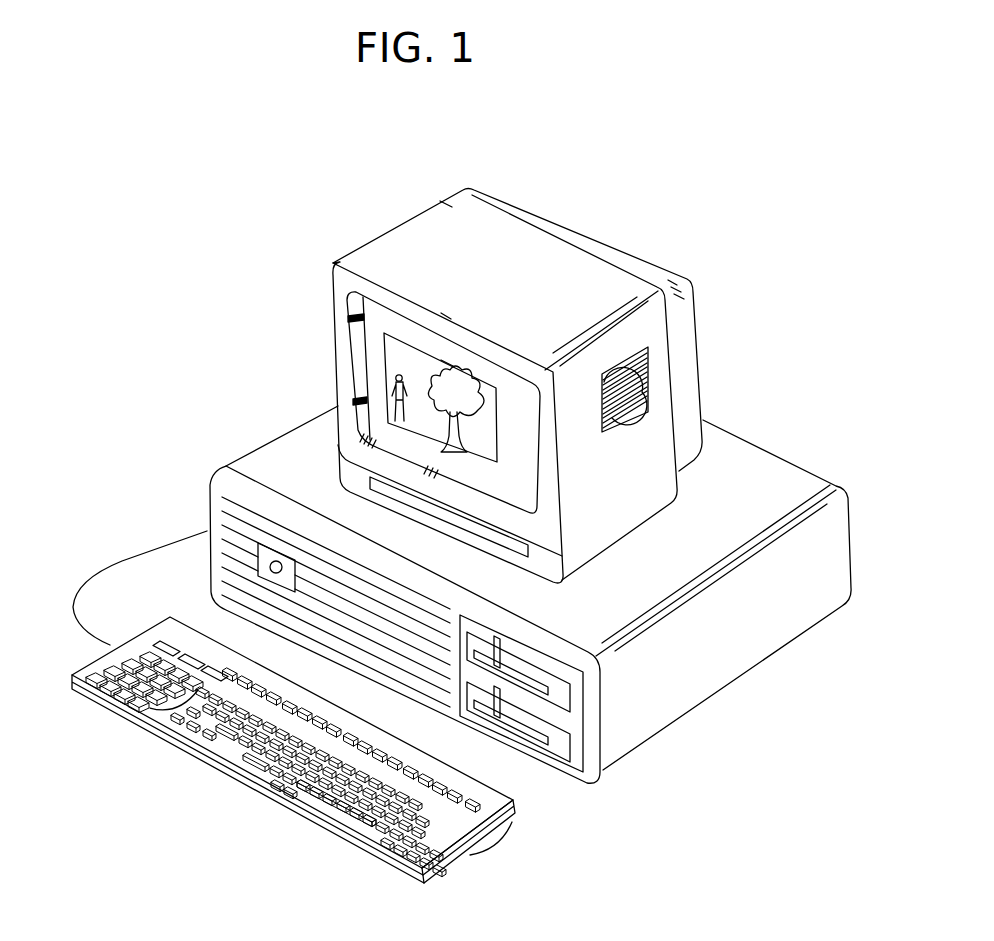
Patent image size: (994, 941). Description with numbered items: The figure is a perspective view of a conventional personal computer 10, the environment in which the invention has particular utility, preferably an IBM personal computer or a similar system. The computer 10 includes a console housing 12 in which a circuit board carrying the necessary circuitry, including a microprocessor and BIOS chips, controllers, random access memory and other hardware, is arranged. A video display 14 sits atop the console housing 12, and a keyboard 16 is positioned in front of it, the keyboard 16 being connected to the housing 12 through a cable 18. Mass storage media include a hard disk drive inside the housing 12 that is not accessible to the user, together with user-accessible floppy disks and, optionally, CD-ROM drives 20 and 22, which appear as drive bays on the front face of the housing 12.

The computer 10 is at (232, 276).
The console housing 12 is at (747, 637).
The video display 14 is at (684, 378).
The keyboard 16 is at (263, 793).
The cable 18 is at (153, 550).
The CD-ROM drive 20 is at (568, 693).
The CD-ROM drive 22 is at (570, 740).